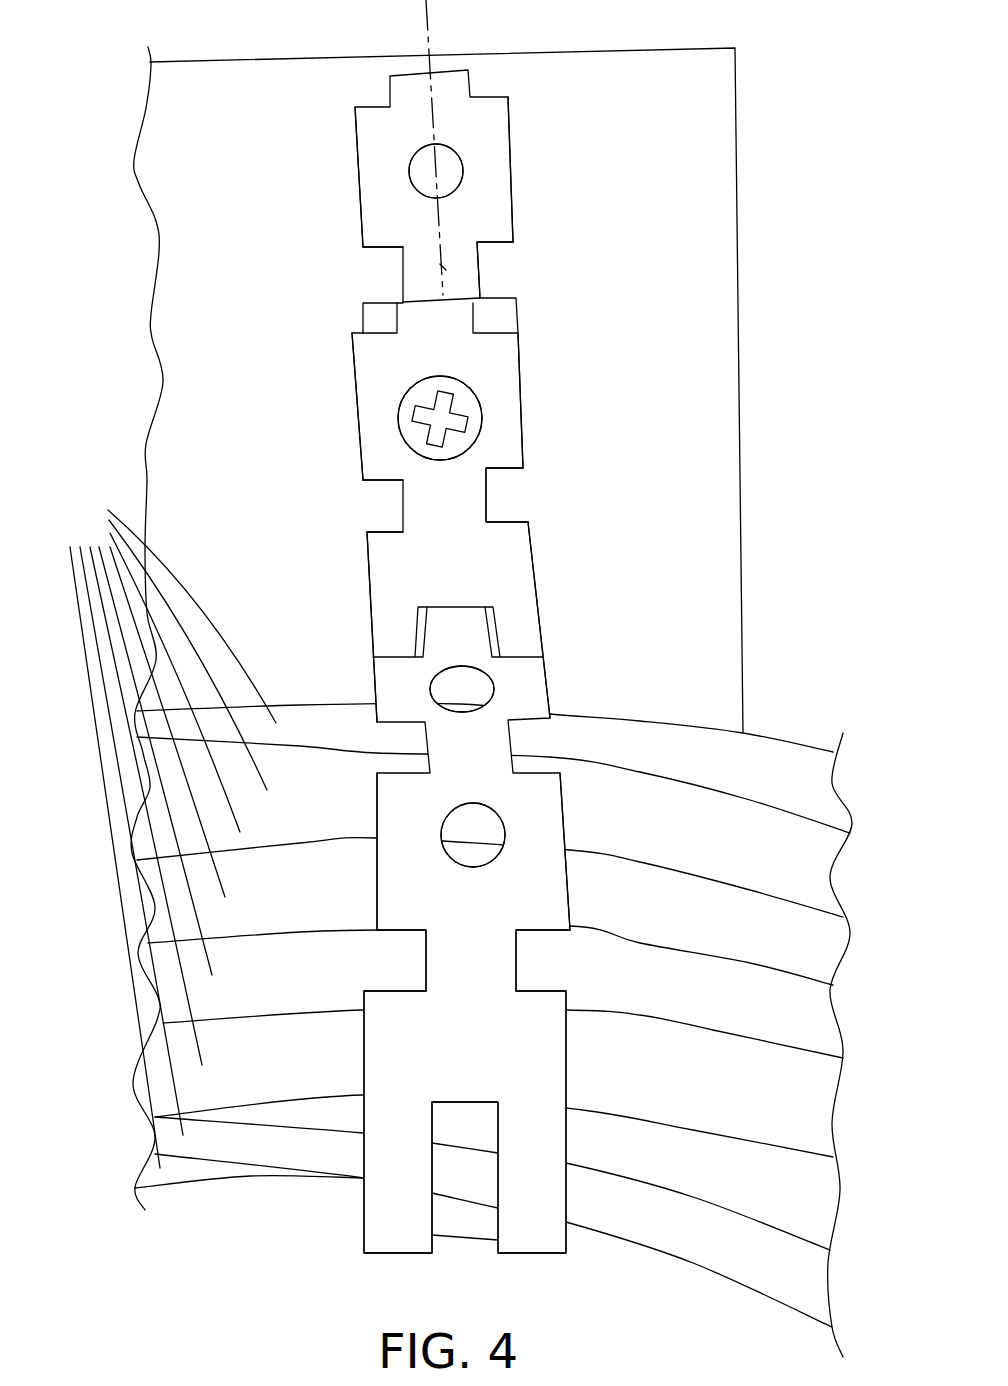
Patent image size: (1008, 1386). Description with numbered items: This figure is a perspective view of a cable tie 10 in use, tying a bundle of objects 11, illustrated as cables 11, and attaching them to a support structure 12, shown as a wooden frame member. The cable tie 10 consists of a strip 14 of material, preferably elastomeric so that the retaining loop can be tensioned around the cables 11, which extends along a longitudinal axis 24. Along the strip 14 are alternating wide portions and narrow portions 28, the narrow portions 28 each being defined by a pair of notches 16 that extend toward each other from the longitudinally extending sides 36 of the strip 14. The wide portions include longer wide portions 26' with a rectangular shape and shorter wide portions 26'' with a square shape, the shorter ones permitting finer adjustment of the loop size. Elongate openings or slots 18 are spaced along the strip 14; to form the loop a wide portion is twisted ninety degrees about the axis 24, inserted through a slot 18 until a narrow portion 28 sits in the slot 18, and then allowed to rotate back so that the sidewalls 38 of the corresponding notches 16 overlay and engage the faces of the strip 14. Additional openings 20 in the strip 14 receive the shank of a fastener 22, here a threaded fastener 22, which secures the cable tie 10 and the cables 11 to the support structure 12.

The cable tie 10 is at (313, 165).
The objects 11 is at (173, 837).
The support structure 12 is at (212, 243).
The strip 14 is at (388, 88).
The notches 16 is at (497, 255).
The slots 18 is at (420, 607).
The openings 20 is at (420, 166).
The fastener 22 is at (402, 400).
The longitudinal axis 24 is at (428, 23).
The shorter wide portions 26'' is at (451, 513).
The longer wide portions 26' is at (515, 1122).
The narrow portions 28 is at (443, 268).
The longitudinally extending sides 36 is at (377, 893).
The sidewalls 38 is at (373, 254).